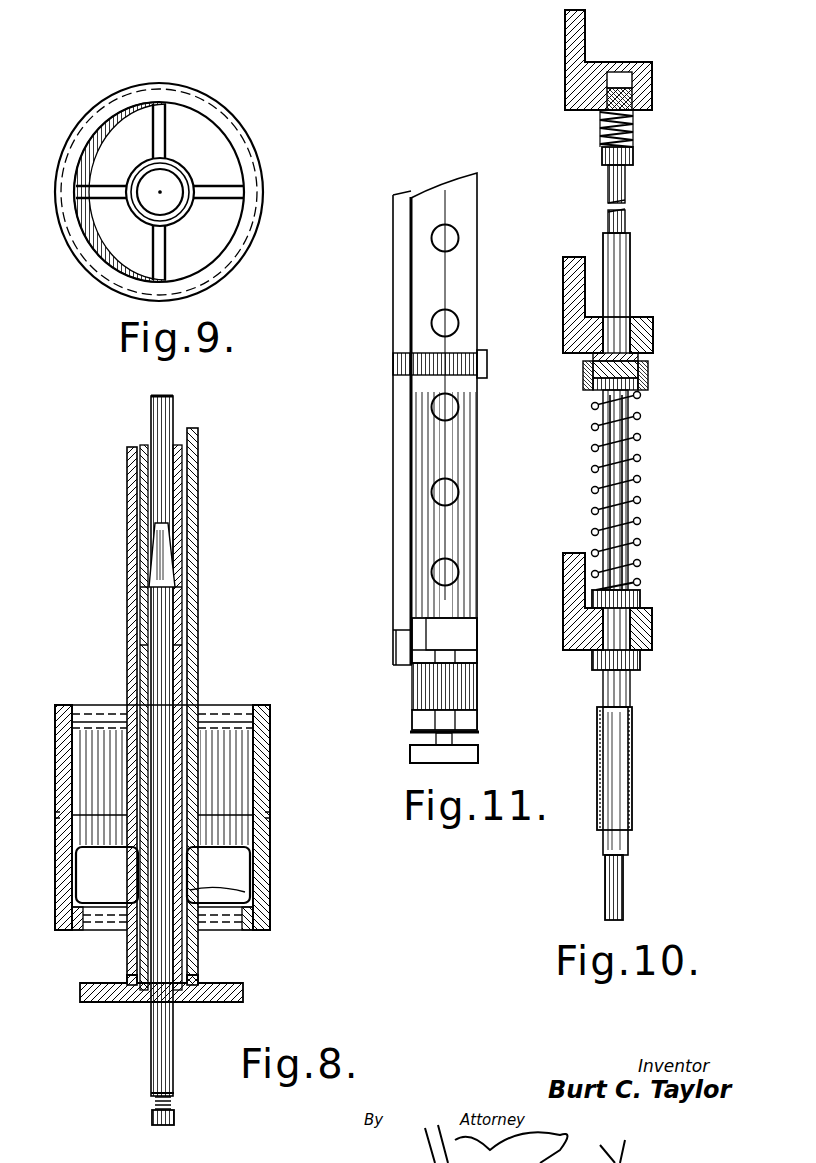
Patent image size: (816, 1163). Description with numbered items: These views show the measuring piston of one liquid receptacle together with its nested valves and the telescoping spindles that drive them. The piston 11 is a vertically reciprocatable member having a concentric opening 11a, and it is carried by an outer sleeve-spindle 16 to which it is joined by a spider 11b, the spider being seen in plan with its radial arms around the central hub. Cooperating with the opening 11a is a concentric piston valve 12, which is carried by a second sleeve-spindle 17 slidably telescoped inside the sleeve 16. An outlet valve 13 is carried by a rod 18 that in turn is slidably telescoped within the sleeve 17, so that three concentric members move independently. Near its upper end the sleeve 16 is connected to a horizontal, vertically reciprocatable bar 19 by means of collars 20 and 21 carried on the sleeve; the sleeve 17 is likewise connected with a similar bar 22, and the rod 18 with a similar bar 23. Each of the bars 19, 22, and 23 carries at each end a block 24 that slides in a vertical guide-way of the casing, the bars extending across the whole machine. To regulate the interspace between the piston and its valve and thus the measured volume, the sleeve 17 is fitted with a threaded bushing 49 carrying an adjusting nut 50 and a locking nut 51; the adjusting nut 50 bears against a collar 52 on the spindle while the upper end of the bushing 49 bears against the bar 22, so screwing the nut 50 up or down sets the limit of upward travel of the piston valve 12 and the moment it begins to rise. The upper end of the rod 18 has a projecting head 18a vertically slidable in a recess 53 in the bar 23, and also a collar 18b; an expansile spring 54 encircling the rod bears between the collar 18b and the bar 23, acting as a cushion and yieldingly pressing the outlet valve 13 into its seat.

In FIG. 9, the piston 11 is at (245, 222).
In FIG. 8, the piston 11 is at (268, 778).
In FIG. 9, the opening 11a is at (170, 204).
In FIG. 8, the opening 11a is at (103, 918).
In FIG. 9, the spider 11b is at (274, 169).
In FIG. 8, the spider 11b is at (163, 875).
In FIG. 8, the piston valve 12 is at (242, 995).
In FIG. 8, the outlet valve 13 is at (170, 1105).
In FIG. 8, the sleeve-spindle 16 is at (212, 714).
In FIG. 10, the sleeve-spindle 16 is at (632, 810).
In FIG. 8, the sleeve-spindle 17 is at (185, 487).
In FIG. 10, the sleeve-spindle 17 is at (628, 515).
In FIG. 8, the rod 18 is at (160, 525).
In FIG. 10, the rod 18 is at (640, 470).
In FIG. 10, the projecting head 18a is at (632, 80).
In FIG. 10, the collar 18b is at (636, 158).
In FIG. 10, the bar 19 is at (650, 640).
In FIG. 10, the collar 20 is at (640, 667).
In FIG. 10, the collar 21 is at (640, 602).
In FIG. 11, the bar 22 is at (470, 592).
In FIG. 10, the bar 22 is at (650, 330).
In FIG. 10, the bar 23 is at (632, 100).
In FIG. 11, the block 24 is at (465, 756).
In FIG. 10, the threaded bushing 49 is at (640, 357).
In FIG. 10, the adjusting nut 50 is at (650, 382).
In FIG. 10, the locking nut 51 is at (650, 367).
In FIG. 10, the collar 52 is at (645, 392).
In FIG. 10, the recess 53 is at (622, 78).
In FIG. 10, the expansile spring 54 is at (640, 130).